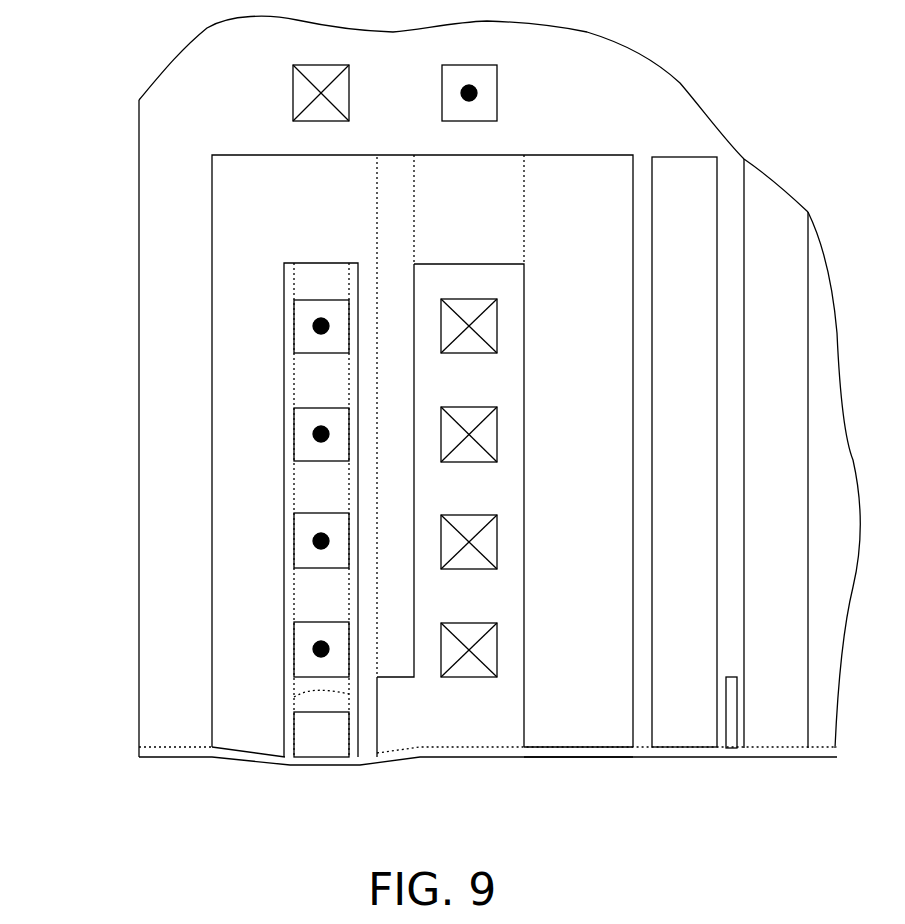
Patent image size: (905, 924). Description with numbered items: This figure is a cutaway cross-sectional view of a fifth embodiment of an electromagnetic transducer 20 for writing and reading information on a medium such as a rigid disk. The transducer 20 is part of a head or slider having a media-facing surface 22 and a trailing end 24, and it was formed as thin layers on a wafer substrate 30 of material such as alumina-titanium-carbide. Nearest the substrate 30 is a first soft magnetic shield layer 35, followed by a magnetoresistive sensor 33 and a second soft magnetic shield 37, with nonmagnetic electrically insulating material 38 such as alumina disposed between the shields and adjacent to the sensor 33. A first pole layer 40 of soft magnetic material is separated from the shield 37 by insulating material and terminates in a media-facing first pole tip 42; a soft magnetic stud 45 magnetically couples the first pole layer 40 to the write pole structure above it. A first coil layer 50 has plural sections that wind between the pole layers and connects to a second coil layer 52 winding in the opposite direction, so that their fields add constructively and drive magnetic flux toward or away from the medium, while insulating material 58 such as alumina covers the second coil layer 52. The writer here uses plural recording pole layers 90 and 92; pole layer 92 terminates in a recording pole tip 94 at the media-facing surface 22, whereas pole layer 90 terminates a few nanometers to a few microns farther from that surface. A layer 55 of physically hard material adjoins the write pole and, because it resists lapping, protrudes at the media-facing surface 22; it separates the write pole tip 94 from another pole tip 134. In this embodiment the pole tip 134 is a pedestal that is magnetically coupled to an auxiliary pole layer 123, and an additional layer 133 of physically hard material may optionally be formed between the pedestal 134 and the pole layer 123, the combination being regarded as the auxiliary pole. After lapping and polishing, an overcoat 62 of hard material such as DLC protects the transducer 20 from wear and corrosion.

The electromagnetic transducer 20 is at (95, 79).
The media-facing surface 22 is at (818, 770).
The trailing end 24 is at (128, 568).
The wafer substrate 30 is at (847, 549).
The magnetoresistive sensor 33 is at (737, 677).
The first soft magnetic shield layer 35 is at (791, 471).
The second soft magnetic shield 37 is at (697, 471).
The nonmagnetic electrically insulating material 38 is at (727, 262).
The first pole layer 40 is at (584, 475).
The first pole tip 42 is at (558, 770).
The soft magnetic stud 45 is at (474, 223).
The first coil layer 50 is at (498, 650).
The second coil layer 52 is at (294, 325).
The layer of physically hard material 55 is at (294, 695).
The insulating material 58 is at (336, 496).
The overcoat 62 is at (652, 757).
The recording pole layer 90 is at (405, 597).
The recording pole layer 92 is at (378, 712).
The recording pole tip 94 is at (370, 770).
The auxiliary pole layer 123 is at (272, 538).
The additional layer of physically hard material 133 is at (284, 602).
The pole tip 134 is at (309, 770).